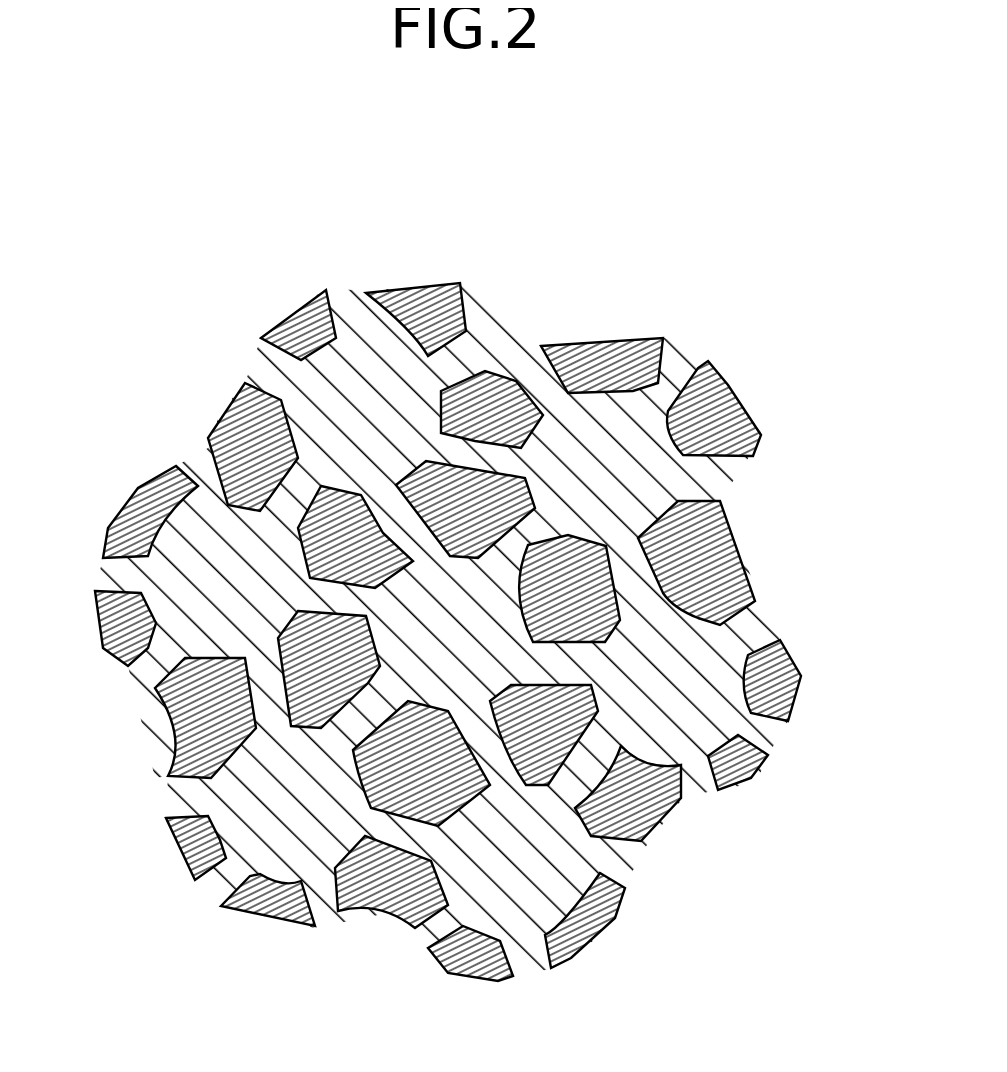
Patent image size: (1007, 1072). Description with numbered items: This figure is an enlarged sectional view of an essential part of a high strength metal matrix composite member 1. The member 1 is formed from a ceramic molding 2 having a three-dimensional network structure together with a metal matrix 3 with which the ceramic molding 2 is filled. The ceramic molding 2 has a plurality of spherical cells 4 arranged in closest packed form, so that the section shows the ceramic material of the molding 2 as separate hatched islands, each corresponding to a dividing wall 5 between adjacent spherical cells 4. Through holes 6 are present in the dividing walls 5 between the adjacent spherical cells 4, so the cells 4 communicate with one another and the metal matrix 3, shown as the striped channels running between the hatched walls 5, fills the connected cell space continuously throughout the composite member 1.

The metal matrix composite member 1 is at (396, 262).
The ceramic molding 2 is at (731, 389).
The metal matrix 3 is at (703, 680).
The spherical cells 4 is at (276, 414).
The dividing walls 5 is at (605, 337).
The through holes 6 is at (265, 348).